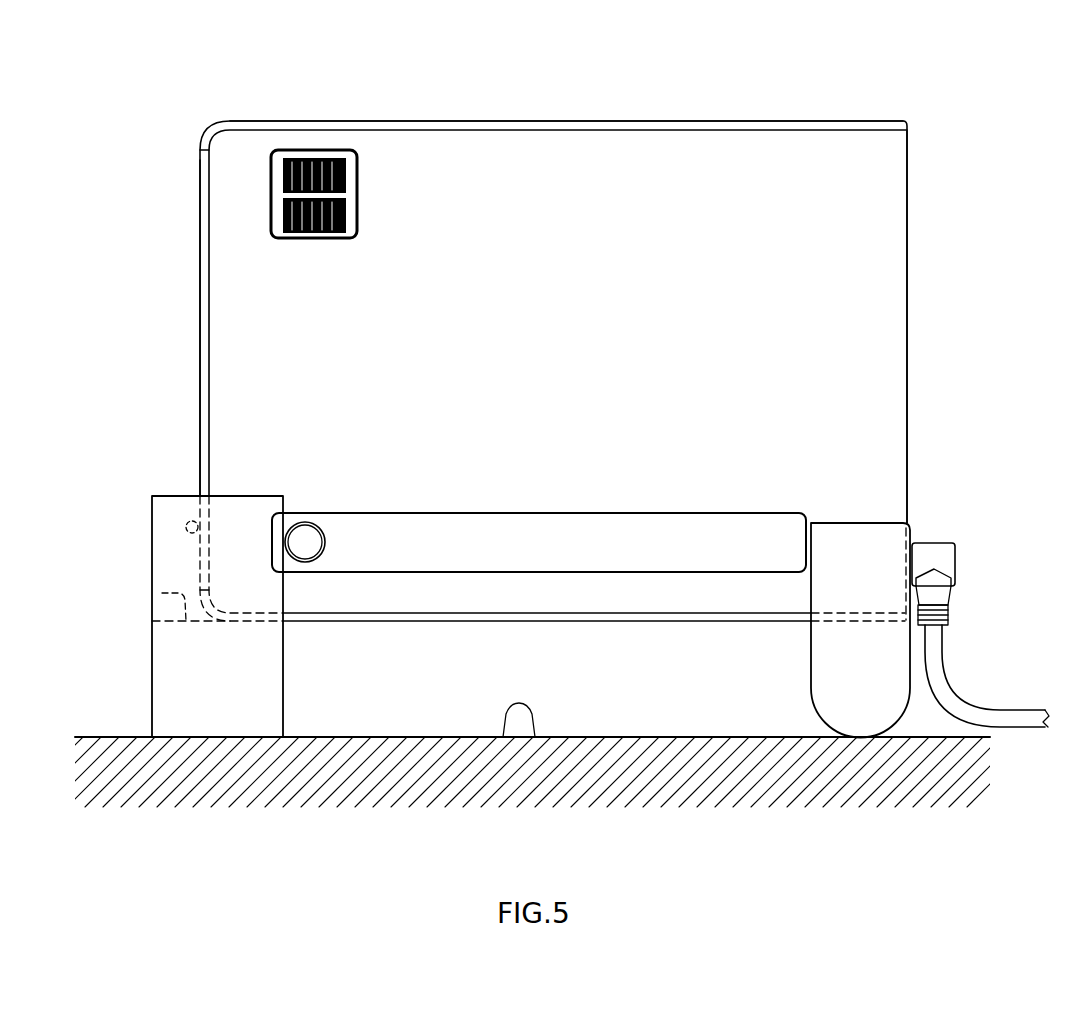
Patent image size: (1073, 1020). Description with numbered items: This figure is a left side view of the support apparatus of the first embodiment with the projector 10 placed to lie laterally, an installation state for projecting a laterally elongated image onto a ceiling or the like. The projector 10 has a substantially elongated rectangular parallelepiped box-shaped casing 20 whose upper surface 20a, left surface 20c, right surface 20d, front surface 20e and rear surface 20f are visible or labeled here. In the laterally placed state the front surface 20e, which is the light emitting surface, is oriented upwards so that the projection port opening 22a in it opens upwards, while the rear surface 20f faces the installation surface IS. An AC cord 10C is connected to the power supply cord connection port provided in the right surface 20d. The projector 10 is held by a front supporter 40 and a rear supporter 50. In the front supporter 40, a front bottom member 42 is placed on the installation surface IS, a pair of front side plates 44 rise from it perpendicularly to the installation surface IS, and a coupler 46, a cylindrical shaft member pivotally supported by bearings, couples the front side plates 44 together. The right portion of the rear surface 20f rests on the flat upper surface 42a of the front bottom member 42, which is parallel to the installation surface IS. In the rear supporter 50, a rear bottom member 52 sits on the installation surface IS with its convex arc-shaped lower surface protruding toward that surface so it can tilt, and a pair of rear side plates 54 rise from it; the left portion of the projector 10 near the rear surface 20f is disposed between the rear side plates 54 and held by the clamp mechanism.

The projector 10 is at (206, 118).
The AC cord 10C is at (960, 690).
The casing 20 is at (901, 120).
The upper surface 20a is at (580, 205).
The left surface 20c is at (200, 283).
The right surface 20d is at (908, 283).
The front surface 20e is at (498, 121).
The rear surface 20f is at (409, 622).
The projection port opening 22a is at (315, 117).
The front supporter 40 is at (213, 744).
The front bottom member 42 is at (197, 692).
The upper surface of the front bottom member 42a is at (162, 593).
The front side plates 44 is at (180, 557).
The coupler 46 is at (186, 524).
The rear supporter 50 is at (861, 742).
The rear bottom member 52 is at (857, 680).
The rear side plates 54 is at (856, 563).
The installation surface IS is at (508, 735).